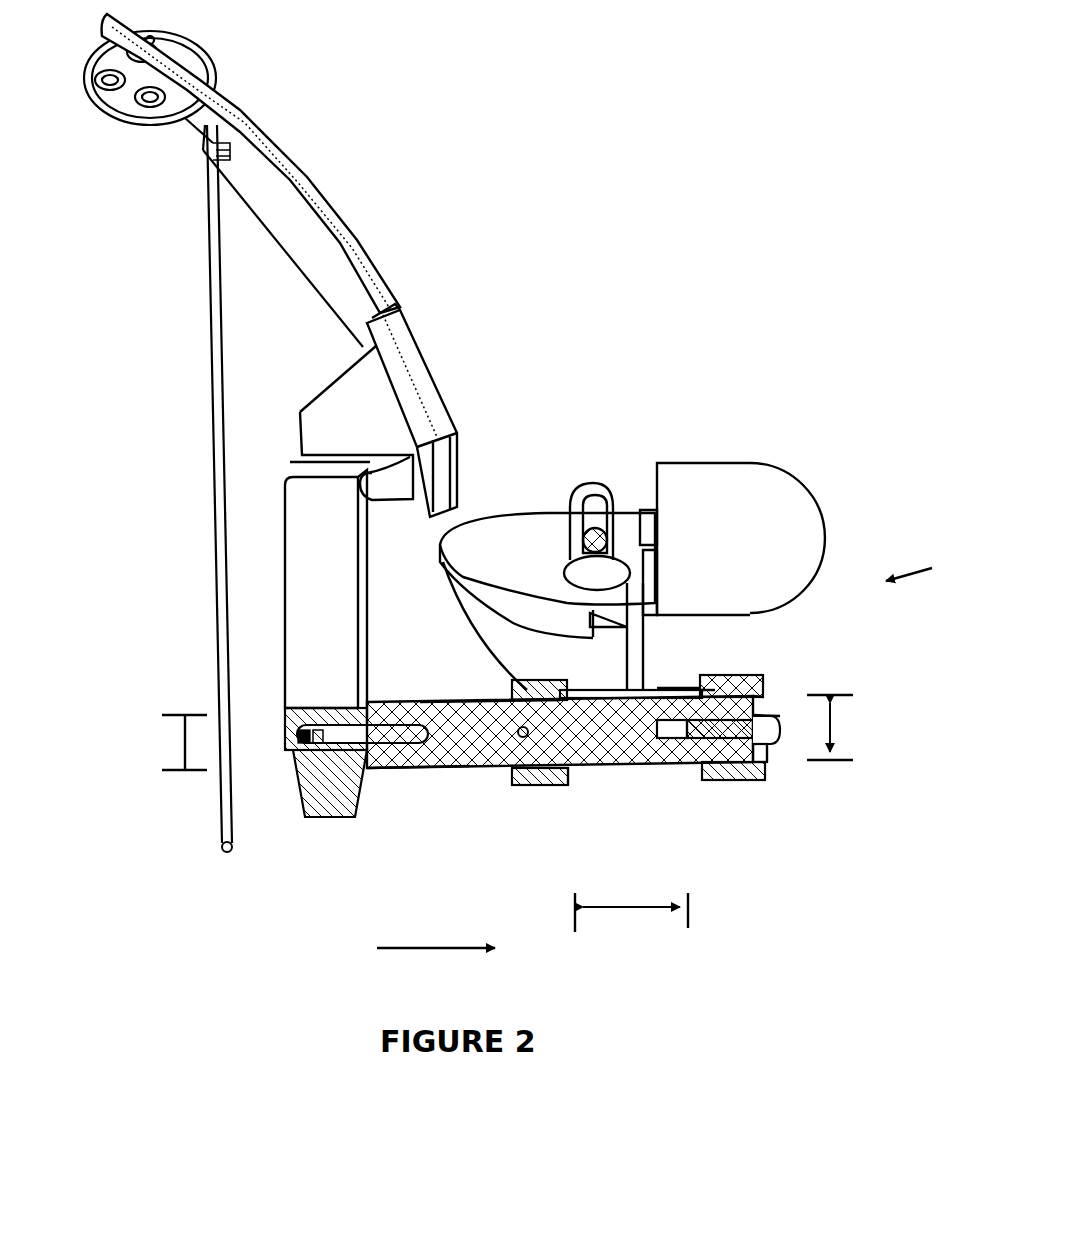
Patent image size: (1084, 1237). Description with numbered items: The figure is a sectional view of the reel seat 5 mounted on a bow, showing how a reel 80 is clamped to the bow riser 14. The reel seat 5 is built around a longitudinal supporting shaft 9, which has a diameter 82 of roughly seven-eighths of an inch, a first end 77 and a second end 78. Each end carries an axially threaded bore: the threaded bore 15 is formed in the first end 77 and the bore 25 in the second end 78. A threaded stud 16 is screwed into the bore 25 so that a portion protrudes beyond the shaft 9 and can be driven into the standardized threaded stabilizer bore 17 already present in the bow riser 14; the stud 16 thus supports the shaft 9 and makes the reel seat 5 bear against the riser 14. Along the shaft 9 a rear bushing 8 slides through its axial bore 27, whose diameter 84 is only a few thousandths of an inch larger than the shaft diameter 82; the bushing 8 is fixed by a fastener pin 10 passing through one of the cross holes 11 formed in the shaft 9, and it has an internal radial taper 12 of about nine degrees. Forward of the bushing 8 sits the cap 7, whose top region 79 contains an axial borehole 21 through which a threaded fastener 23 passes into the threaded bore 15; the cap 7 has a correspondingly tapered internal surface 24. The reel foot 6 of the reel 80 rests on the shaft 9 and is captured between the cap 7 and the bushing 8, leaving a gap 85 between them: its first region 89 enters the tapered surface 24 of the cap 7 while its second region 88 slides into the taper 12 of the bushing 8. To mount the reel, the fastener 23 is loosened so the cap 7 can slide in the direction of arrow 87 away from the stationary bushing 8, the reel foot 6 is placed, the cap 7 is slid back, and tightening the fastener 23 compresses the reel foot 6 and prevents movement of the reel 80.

The reel seat 5 is at (918, 565).
The reel foot 6 is at (657, 688).
The cap 7 is at (730, 680).
The rear bushing 8 is at (537, 787).
The supporting shaft 9 is at (588, 746).
The fastener pin 10 is at (492, 702).
The cross hole 11 is at (521, 736).
The internal radial taper 12 is at (567, 772).
The bow riser 14 is at (303, 606).
The threaded bore 15 is at (673, 730).
The threaded stud 16 is at (366, 748).
The threaded stabilizer bore 17 is at (297, 738).
The axial borehole 21 is at (763, 690).
The threaded fastener 23 is at (780, 715).
The internal surface 24 is at (717, 767).
The bore 25 is at (420, 773).
The axial bore 27 is at (523, 685).
The first end 77 is at (760, 752).
The second end 78 is at (377, 760).
The top region 79 is at (767, 745).
The reel 80 is at (695, 480).
The diameter 82 is at (833, 730).
The diameter 84 is at (183, 742).
The gap 85 is at (610, 908).
The arrow 87 is at (448, 948).
The second region 88 is at (580, 697).
The first region 89 is at (707, 690).